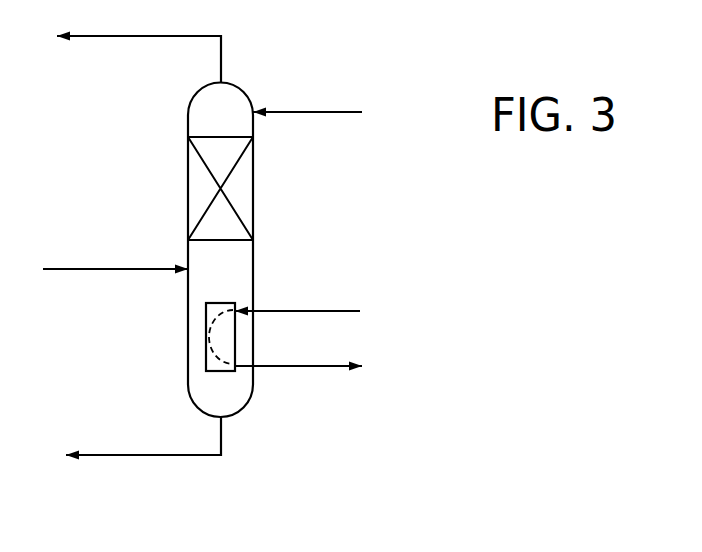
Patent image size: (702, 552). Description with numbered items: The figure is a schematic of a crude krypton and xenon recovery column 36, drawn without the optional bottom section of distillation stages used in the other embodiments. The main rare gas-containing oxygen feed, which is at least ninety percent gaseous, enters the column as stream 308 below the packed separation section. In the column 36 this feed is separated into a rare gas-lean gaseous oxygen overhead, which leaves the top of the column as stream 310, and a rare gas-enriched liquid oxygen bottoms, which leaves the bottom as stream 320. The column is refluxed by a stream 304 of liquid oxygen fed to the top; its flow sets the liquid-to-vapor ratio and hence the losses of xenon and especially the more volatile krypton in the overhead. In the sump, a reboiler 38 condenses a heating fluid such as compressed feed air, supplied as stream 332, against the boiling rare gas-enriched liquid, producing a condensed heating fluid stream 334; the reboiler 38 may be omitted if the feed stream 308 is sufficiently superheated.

The crude krypton and xenon recovery column 36 is at (255, 198).
The reboiler 38 is at (217, 371).
The LOX reflux stream 304 is at (297, 112).
The oxygen feed stream 308 is at (140, 268).
The GOX overhead stream 310 is at (158, 37).
The LOX bottoms stream 320 is at (132, 455).
The heating fluid stream 332 is at (298, 311).
The condensed heating fluid stream 334 is at (292, 366).